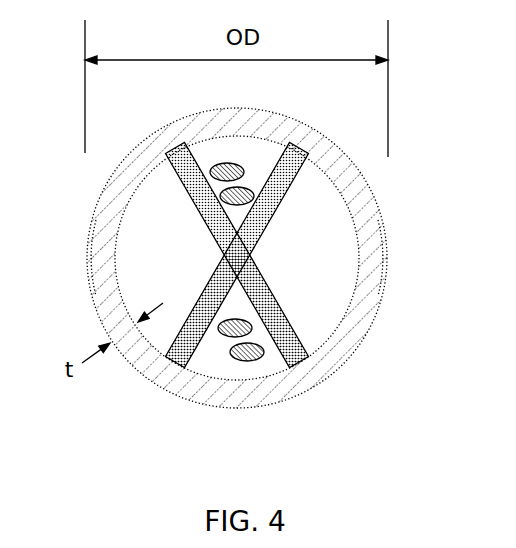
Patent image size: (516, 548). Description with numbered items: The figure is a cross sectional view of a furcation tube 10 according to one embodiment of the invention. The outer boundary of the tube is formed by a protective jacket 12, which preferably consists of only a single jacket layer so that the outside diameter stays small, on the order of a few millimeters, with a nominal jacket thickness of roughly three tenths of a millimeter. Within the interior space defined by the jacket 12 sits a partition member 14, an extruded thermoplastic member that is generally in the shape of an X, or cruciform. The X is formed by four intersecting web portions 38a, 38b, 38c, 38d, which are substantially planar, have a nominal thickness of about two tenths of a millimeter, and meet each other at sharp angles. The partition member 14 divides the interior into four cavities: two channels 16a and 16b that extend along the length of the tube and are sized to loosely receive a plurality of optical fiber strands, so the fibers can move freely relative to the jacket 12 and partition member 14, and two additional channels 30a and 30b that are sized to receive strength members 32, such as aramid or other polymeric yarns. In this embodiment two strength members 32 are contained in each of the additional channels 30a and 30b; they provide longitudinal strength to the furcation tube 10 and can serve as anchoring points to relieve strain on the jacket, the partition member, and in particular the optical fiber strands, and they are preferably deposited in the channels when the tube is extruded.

The furcation tube 10 is at (49, 203).
The protective jacket 12 is at (377, 200).
The partition member 14 is at (306, 331).
The channel 16a is at (138, 283).
The channel 16b is at (327, 230).
The additional channel 30a is at (268, 152).
The additional channel 30b is at (268, 367).
The strength members 32 is at (221, 197).
The web portion 38a is at (200, 218).
The web portion 38b is at (287, 208).
The web portion 38c is at (277, 310).
The web portion 38d is at (171, 337).